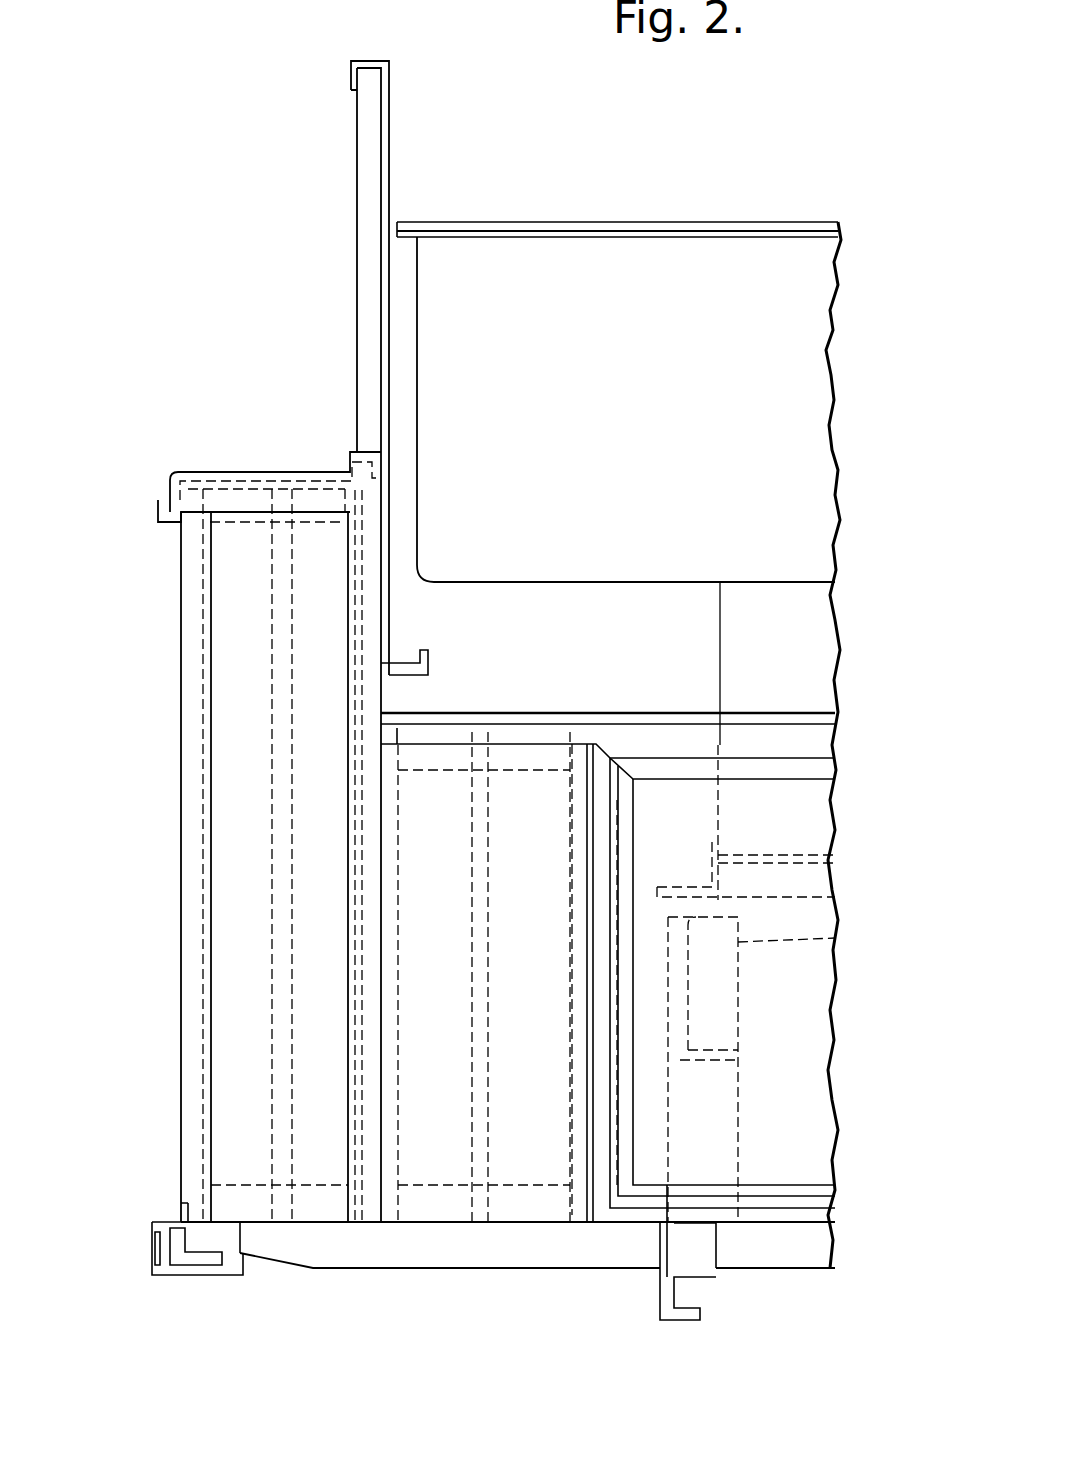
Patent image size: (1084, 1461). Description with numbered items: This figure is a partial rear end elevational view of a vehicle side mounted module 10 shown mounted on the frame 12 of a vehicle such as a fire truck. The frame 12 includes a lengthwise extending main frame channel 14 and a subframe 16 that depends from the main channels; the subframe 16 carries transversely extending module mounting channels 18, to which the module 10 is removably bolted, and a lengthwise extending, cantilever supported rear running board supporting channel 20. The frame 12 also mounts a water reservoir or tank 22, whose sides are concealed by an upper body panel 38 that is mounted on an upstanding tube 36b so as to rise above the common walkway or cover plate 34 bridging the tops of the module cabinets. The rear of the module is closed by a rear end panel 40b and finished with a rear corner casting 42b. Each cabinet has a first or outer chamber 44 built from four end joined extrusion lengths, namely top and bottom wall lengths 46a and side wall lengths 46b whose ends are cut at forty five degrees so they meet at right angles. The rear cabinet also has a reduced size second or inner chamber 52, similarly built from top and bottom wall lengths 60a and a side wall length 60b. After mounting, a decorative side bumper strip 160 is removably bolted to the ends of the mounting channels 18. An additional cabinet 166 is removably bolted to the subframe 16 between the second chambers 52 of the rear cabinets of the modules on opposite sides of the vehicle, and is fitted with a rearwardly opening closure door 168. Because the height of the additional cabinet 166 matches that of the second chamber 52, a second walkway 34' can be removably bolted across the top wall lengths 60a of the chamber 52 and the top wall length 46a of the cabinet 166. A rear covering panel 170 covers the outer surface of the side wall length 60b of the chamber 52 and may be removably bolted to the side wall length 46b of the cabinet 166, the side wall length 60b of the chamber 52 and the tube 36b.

The vehicle side mounted module 10 is at (518, 194).
The frame 12 is at (782, 1012).
The main frame channel 14 is at (748, 944).
The subframe 16 is at (732, 1282).
The module mounting channel 18 is at (486, 1254).
The rear running board supporting channel 20 is at (660, 1245).
The water reservoir or tank 22 is at (632, 501).
The walkway or cover plate 34 is at (280, 442).
The second walkway 34' is at (608, 681).
The upstanding tube 36b is at (357, 286).
The upper body panel 38 is at (391, 182).
The rear end panel 40b is at (252, 815).
The rear corner casting 42b is at (190, 462).
The first or outer chamber 44 is at (240, 992).
The top and bottom wall lengths 46a is at (748, 786).
The side wall lengths 46b is at (642, 832).
The second or inner chamber 52 is at (433, 1058).
The top and bottom wall lengths 60a is at (522, 746).
The side wall length 60b is at (500, 1110).
The decorative side bumper strip 160 is at (185, 1278).
The additional cabinet 166 is at (804, 830).
The rearwardly opening closure door 168 is at (804, 1090).
The rear covering panel 170 is at (548, 905).